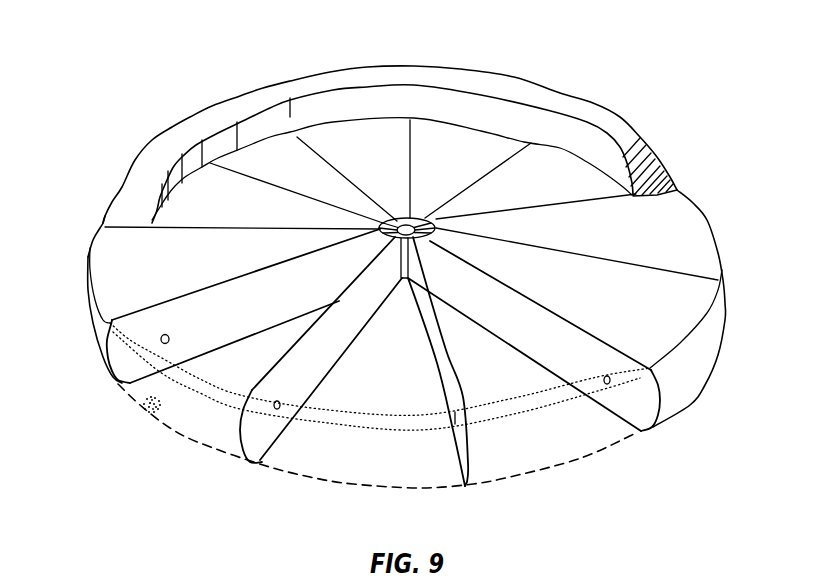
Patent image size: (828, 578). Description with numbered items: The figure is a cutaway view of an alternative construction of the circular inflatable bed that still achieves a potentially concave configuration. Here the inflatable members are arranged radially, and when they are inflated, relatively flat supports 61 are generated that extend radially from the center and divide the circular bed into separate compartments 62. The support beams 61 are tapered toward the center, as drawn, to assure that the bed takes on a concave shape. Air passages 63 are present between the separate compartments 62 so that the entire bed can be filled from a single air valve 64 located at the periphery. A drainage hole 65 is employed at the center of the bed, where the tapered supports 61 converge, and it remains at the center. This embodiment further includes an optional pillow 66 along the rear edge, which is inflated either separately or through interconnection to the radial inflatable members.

The flat supports 61 is at (428, 372).
The separate compartments 62 is at (124, 283).
The air passages 63 is at (603, 382).
The air valve 64 is at (157, 413).
The drainage hole 65 is at (487, 50).
The pillow 66 is at (340, 68).